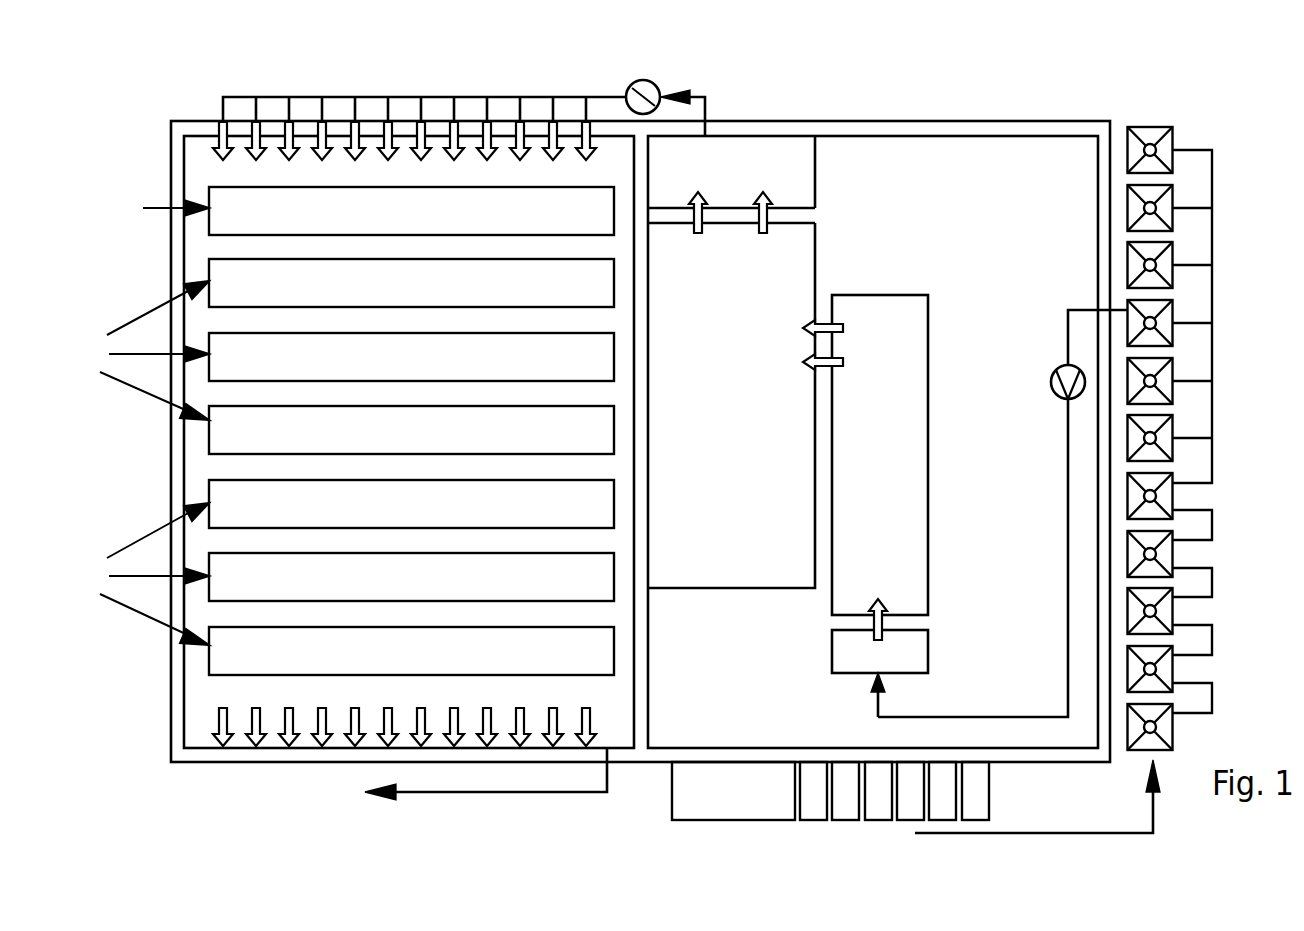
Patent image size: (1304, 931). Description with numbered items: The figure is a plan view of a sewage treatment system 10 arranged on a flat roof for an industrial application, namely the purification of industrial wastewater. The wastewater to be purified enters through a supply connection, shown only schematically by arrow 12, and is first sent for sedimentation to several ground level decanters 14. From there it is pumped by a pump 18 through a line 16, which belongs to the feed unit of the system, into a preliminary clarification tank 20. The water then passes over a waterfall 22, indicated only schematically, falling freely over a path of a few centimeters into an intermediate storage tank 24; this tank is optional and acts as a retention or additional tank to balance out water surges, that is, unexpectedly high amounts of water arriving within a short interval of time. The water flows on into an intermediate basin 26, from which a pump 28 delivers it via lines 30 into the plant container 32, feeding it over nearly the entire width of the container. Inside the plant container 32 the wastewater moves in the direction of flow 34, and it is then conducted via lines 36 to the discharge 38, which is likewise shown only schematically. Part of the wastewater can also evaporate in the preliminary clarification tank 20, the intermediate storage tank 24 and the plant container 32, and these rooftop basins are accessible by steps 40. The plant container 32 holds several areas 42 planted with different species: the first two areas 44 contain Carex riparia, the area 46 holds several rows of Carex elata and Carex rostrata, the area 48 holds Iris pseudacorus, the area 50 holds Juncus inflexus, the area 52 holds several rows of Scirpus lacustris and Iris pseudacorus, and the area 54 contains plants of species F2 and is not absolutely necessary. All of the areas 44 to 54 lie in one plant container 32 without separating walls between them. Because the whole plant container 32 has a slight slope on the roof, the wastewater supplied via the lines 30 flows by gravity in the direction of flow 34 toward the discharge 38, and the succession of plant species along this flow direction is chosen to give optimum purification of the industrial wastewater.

The sewage treatment system 10 is at (970, 113).
The supply connection 12 is at (1060, 834).
The ground level decanters 14 is at (1150, 127).
The line 16 is at (1068, 324).
The pump 18 is at (1058, 368).
The preliminary clarification tank 20 is at (894, 552).
The waterfall 22 is at (838, 342).
The intermediate storage tank 24 is at (725, 379).
The intermediate basin 26 is at (768, 152).
The pump 28 is at (648, 80).
The lines 30 is at (333, 96).
The plant container 32 is at (200, 172).
The direction of flow 34 is at (487, 140).
The lines 36 is at (486, 796).
The discharge 38 is at (548, 793).
The steps 40 is at (878, 812).
The areas 42 is at (142, 419).
The first two areas 44 is at (394, 225).
The area 46 is at (394, 371).
The area 48 is at (394, 444).
The area 50 is at (394, 518).
The area 52 is at (394, 591).
The area 54 is at (394, 665).